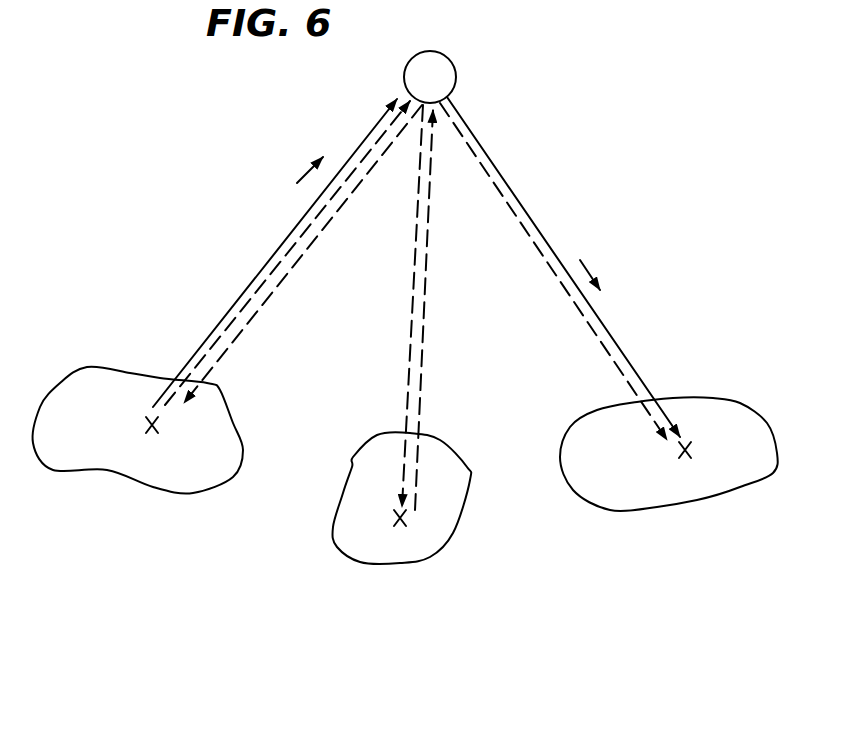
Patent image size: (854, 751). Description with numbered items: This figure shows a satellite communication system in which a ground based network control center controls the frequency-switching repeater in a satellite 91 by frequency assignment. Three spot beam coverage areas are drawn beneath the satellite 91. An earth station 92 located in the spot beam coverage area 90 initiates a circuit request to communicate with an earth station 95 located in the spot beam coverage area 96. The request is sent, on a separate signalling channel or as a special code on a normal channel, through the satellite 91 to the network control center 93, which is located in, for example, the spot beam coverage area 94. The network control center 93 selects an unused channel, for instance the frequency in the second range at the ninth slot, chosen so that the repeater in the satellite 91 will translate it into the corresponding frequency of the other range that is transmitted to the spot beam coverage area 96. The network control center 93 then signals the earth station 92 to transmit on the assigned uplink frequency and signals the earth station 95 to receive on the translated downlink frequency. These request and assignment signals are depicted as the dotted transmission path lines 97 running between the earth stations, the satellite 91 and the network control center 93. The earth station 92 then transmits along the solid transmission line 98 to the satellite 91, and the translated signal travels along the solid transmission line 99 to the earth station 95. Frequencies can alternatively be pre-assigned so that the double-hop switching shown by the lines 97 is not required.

The spot beam coverage area 90 is at (103, 341).
The satellite 91 is at (451, 59).
The earth station 92 is at (143, 425).
The network control center 93 is at (390, 518).
The spot beam coverage area 94 is at (450, 537).
The earth station 95 is at (703, 449).
The spot beam coverage area 96 is at (740, 402).
The dotted transmission path lines 97 is at (303, 248).
The solid transmission line 98 is at (233, 300).
The solid transmission line 99 is at (620, 348).